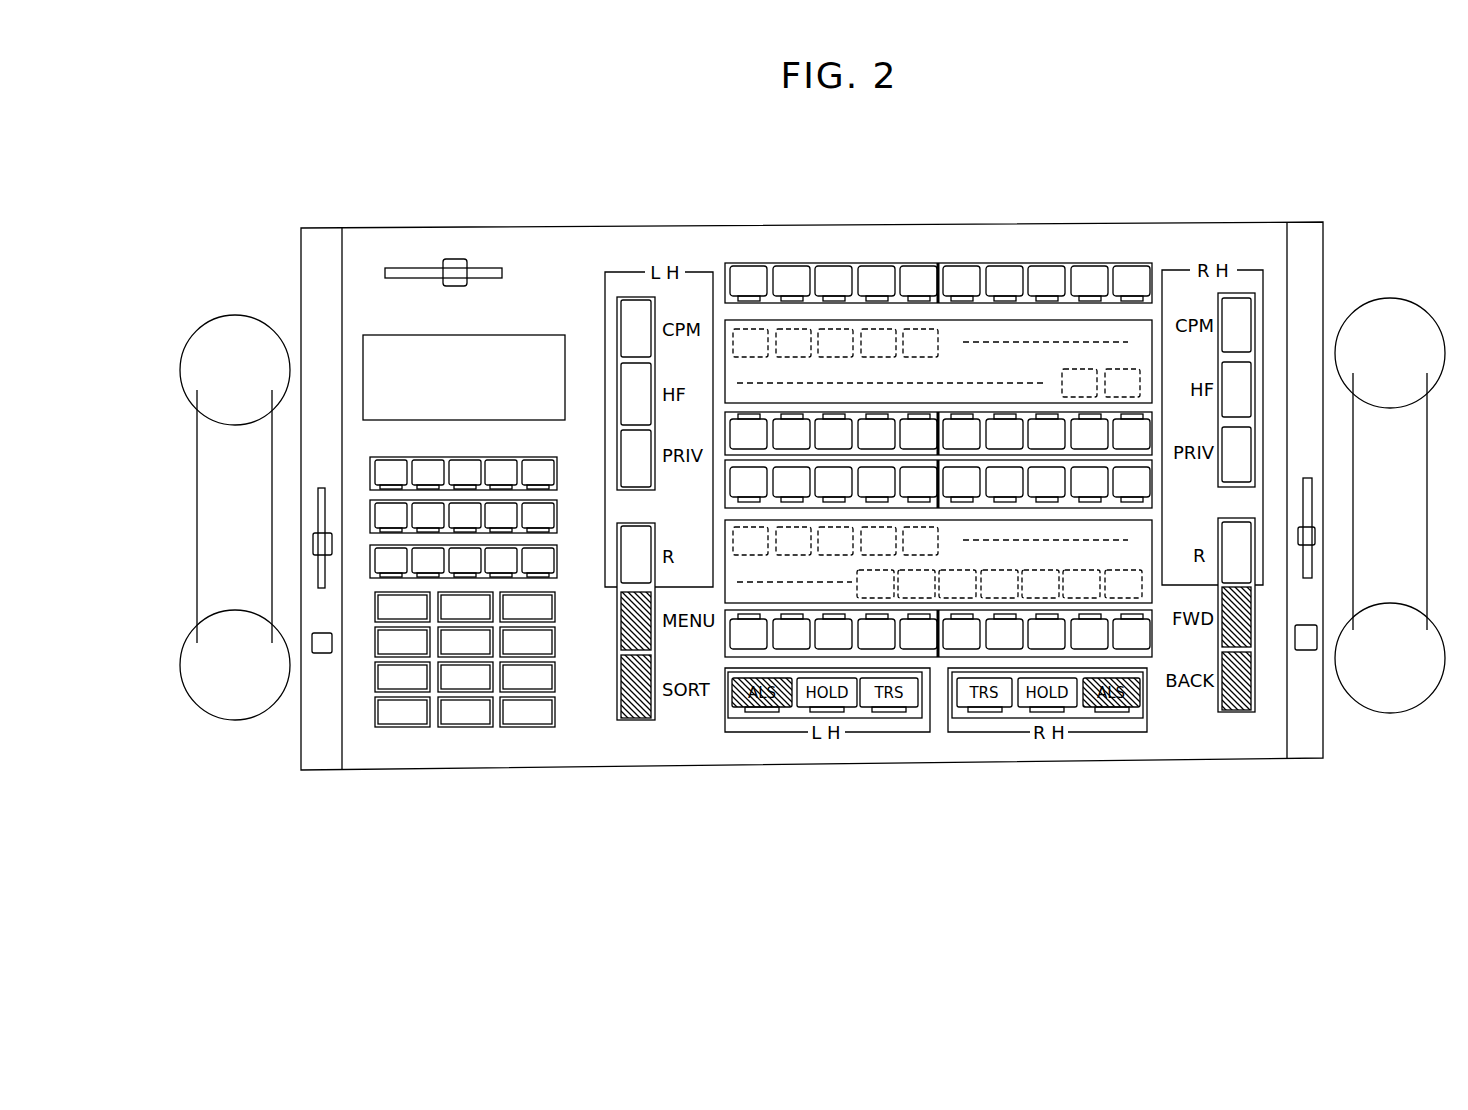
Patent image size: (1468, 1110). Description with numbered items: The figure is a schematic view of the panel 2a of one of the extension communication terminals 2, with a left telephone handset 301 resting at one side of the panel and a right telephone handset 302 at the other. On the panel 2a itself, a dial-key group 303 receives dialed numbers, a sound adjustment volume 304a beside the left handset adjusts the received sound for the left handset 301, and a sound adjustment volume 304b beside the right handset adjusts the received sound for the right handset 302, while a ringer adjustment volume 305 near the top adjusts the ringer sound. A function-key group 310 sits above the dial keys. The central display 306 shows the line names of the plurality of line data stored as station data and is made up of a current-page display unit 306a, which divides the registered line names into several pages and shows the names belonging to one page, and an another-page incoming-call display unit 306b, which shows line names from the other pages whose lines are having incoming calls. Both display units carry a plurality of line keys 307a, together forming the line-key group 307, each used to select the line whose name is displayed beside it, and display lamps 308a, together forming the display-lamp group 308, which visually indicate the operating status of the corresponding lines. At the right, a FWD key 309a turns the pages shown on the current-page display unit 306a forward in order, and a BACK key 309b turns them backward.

The extension communication terminal 2 is at (1148, 168).
The panel 2a is at (1262, 225).
The left telephone handset 301 is at (222, 318).
The right telephone handset 302 is at (1407, 312).
The dial-key group 303 is at (468, 733).
The sound adjustment volume 304a is at (313, 545).
The sound adjustment volume 304b is at (1315, 537).
The ringer adjustment volume 305 is at (457, 262).
The display 306 is at (903, 490).
The current-page display unit 306a is at (735, 328).
The another-page incoming-call display unit 306b is at (1153, 602).
The line-key group 307 is at (731, 474).
The line key 307a is at (752, 292).
The display-lamp group 308 is at (878, 296).
The display lamp 308a is at (745, 292).
The FWD key 309a is at (1258, 637).
The BACK key 309b is at (1242, 707).
The function-key group 310 is at (364, 449).